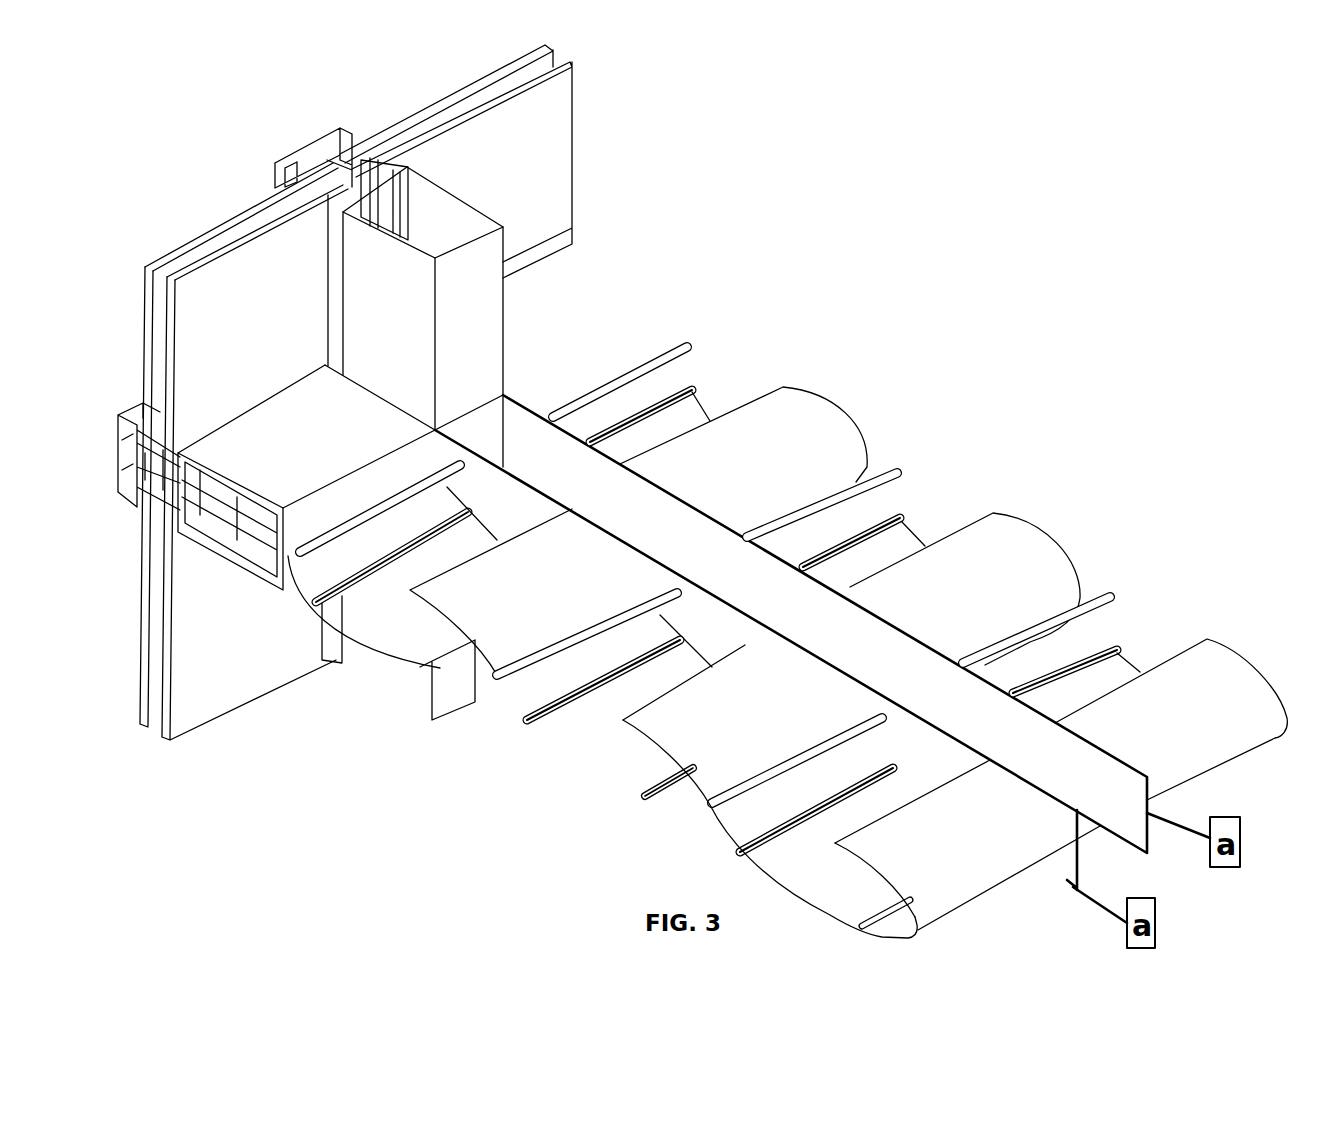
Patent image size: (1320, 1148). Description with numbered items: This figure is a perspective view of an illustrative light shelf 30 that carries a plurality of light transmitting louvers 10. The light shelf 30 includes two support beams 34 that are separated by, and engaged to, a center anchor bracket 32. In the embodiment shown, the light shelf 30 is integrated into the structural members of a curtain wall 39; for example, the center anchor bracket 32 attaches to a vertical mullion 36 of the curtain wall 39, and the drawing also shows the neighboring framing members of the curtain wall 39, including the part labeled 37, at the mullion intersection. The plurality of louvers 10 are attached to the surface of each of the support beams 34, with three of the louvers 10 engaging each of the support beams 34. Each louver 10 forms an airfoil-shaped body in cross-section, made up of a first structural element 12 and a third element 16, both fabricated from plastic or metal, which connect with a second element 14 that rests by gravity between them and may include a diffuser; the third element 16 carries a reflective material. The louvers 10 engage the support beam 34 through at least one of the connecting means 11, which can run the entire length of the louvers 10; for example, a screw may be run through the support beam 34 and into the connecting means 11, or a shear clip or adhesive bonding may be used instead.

The light transmitting louver 10 is at (1005, 582).
The connecting means 11 is at (645, 797).
The first structural element 12 is at (323, 562).
The second element 14 is at (400, 623).
The third element 16 is at (507, 627).
The light shelf 30 is at (897, 211).
The center anchor bracket 32 is at (580, 448).
The support beam 34 is at (765, 625).
The vertical mullion 36 is at (472, 358).
The mullion connector 37 is at (317, 502).
The curtain wall 39 is at (532, 146).